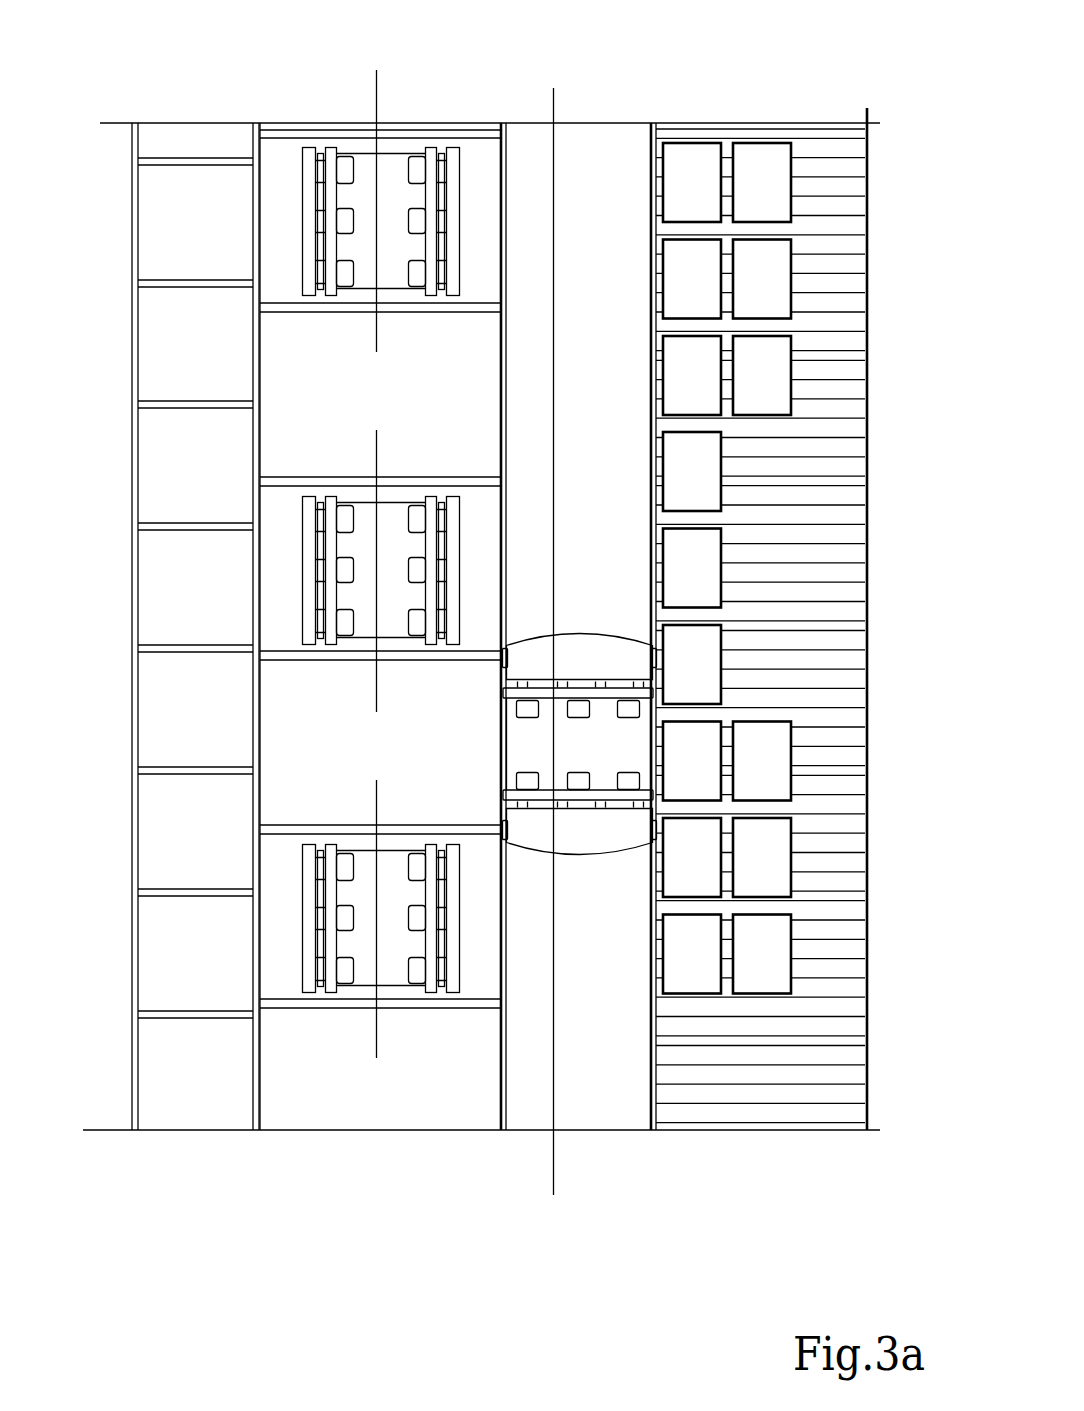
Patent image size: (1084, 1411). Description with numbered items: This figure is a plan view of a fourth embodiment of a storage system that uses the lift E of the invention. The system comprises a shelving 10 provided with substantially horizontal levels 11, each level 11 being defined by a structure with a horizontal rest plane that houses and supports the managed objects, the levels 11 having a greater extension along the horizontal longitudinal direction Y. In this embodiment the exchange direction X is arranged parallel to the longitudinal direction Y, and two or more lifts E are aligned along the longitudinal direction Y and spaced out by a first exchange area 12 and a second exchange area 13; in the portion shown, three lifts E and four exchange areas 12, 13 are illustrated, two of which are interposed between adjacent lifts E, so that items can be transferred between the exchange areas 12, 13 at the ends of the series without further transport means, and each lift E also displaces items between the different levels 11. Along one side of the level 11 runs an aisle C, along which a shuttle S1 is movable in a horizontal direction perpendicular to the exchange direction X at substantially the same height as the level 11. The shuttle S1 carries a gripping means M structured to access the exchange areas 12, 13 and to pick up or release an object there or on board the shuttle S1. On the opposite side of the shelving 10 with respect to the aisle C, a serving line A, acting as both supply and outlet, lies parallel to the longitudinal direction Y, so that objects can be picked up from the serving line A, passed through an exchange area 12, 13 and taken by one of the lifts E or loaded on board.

The shelving 10 is at (478, 122).
The level 11 is at (323, 1073).
The first exchange area 12 is at (388, 400).
The second exchange area 13 is at (388, 756).
The serving line A is at (199, 122).
The aisle C is at (618, 321).
The lift E is at (362, 252).
The gripping means M is at (566, 702).
The shuttle S1 is at (607, 840).
The exchange direction X is at (364, 559).
The longitudinal direction Y is at (541, 637).